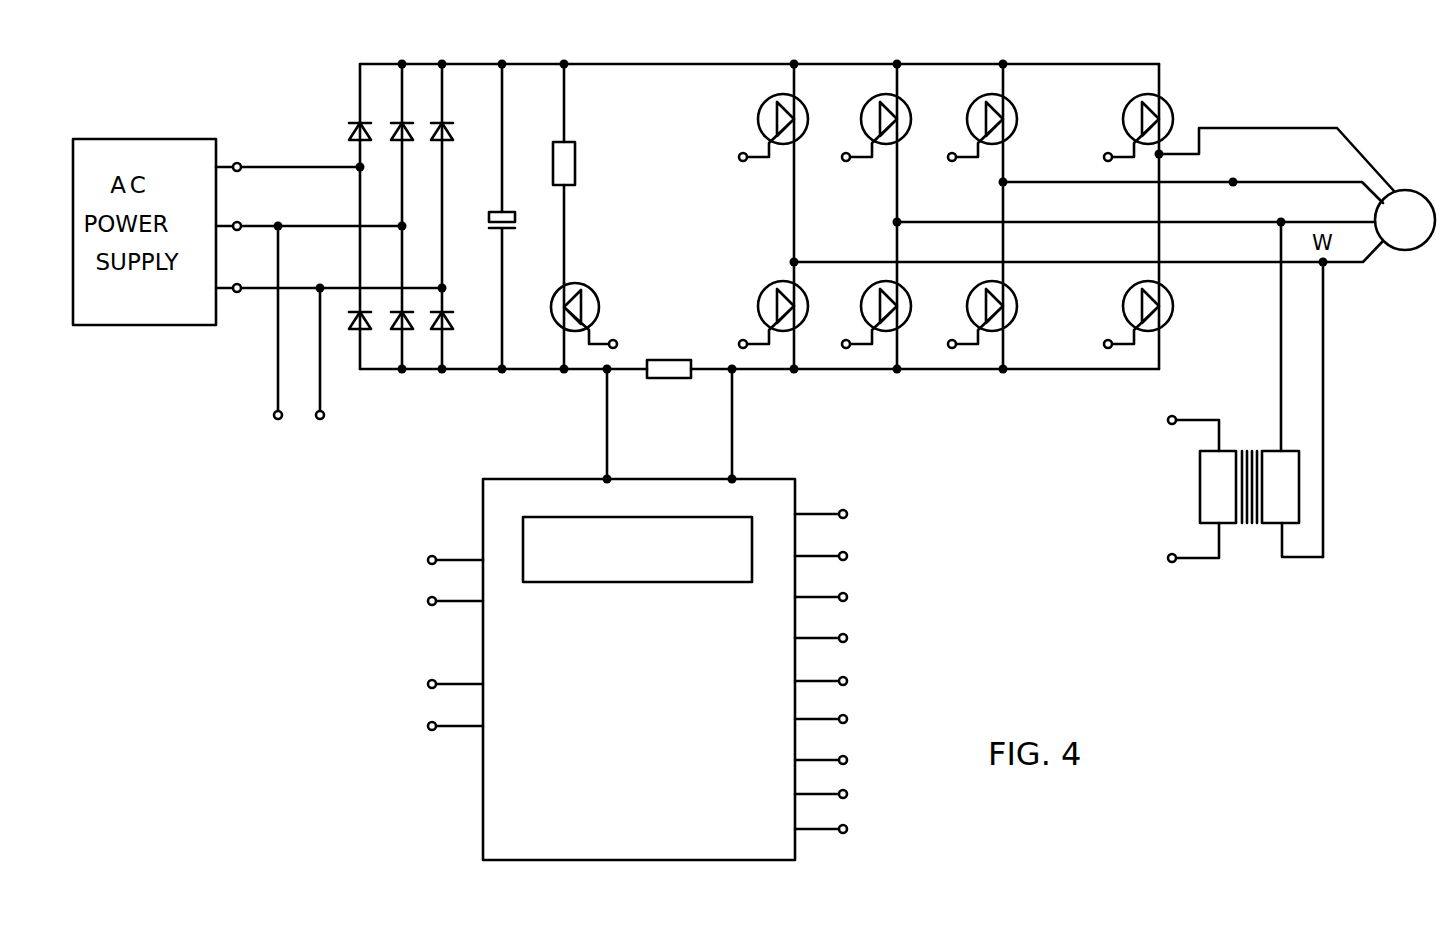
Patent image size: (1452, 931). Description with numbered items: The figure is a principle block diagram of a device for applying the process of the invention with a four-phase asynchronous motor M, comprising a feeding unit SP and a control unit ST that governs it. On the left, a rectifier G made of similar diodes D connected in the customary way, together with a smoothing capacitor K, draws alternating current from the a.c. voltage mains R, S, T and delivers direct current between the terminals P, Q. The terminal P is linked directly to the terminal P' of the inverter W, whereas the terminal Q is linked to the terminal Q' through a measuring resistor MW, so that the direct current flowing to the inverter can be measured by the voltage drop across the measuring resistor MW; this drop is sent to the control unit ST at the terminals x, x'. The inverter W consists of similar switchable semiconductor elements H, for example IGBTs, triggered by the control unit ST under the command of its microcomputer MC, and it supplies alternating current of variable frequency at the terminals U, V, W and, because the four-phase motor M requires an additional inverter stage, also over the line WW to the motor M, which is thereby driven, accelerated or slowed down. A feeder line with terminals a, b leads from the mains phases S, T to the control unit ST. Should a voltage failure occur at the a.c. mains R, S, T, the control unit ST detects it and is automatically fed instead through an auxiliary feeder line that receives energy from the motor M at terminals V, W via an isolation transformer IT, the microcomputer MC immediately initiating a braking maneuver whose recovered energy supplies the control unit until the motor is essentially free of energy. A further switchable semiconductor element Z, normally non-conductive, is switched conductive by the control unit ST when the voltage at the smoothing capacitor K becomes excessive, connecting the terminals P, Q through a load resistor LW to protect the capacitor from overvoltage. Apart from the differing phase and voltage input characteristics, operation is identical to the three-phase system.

The diode D is at (349, 127).
The rectifier G is at (397, 216).
The smoothing capacitor K is at (508, 211).
The terminal P is at (500, 44).
The terminal Q is at (502, 392).
The terminal P' is at (795, 43).
The terminal Q' is at (797, 392).
The load resistor LW is at (575, 165).
The switchable semiconductor element Z is at (597, 302).
The feeding unit SP is at (690, 218).
The measuring resistor MW is at (667, 379).
The inverter W is at (942, 216).
The switchable semiconductor element H is at (1014, 113).
The terminal U is at (1191, 176).
The terminal V is at (1134, 321).
The line WW is at (1275, 146).
The asynchronous motor M is at (1414, 233).
The isolation transformer IT is at (1250, 557).
The control unit ST is at (646, 614).
The microcomputer MC is at (646, 559).
The a.c. voltage mains phase R is at (290, 156).
The a.c. voltage mains phase S is at (311, 216).
The a.c. voltage mains phase T is at (331, 277).
The terminal a is at (278, 337).
The terminal b is at (319, 368).
The terminal x is at (591, 426).
The terminal x' is at (747, 426).